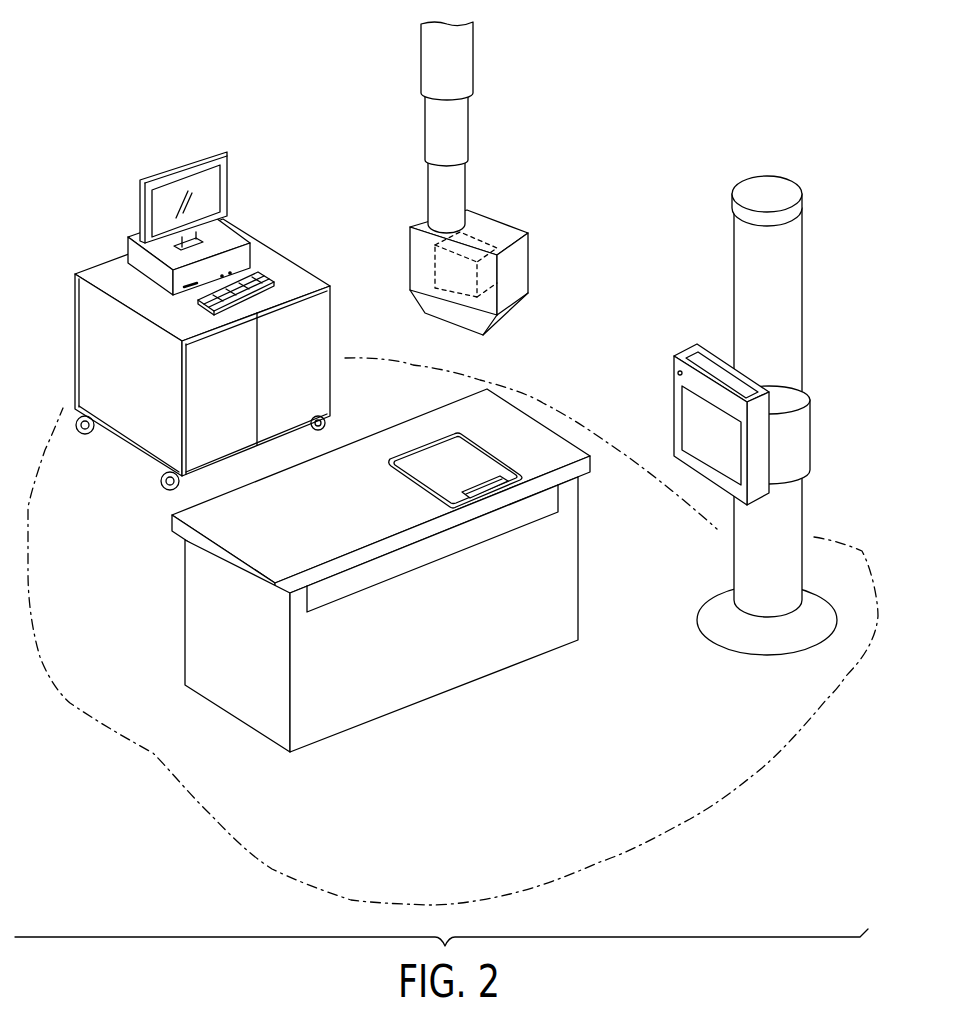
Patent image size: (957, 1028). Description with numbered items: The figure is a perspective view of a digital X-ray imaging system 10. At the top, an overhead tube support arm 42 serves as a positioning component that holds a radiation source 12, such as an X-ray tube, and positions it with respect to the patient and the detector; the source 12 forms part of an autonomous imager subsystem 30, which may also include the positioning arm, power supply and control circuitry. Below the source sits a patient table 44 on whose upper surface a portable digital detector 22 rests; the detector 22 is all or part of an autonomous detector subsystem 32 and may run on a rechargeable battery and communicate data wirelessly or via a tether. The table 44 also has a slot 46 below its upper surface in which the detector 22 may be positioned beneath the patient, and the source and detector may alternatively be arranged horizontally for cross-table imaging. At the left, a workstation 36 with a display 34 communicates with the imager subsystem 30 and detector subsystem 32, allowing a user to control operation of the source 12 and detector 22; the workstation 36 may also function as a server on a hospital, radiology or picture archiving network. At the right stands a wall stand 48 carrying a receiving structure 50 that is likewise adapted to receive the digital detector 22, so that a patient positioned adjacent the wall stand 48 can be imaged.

The imaging system 10 is at (615, 112).
The radiation source 12 is at (480, 235).
The portable digital detector 22 is at (461, 435).
The autonomous imager subsystem 30 is at (499, 243).
The detector subsystem 32 is at (478, 436).
The display 34 is at (222, 152).
The workstation 36 is at (247, 232).
The overhead tube support arm 42 is at (475, 64).
The patient table 44 is at (396, 570).
The slot 46 is at (493, 530).
The wall stand 48 is at (734, 282).
The receiving structure 50 is at (676, 352).